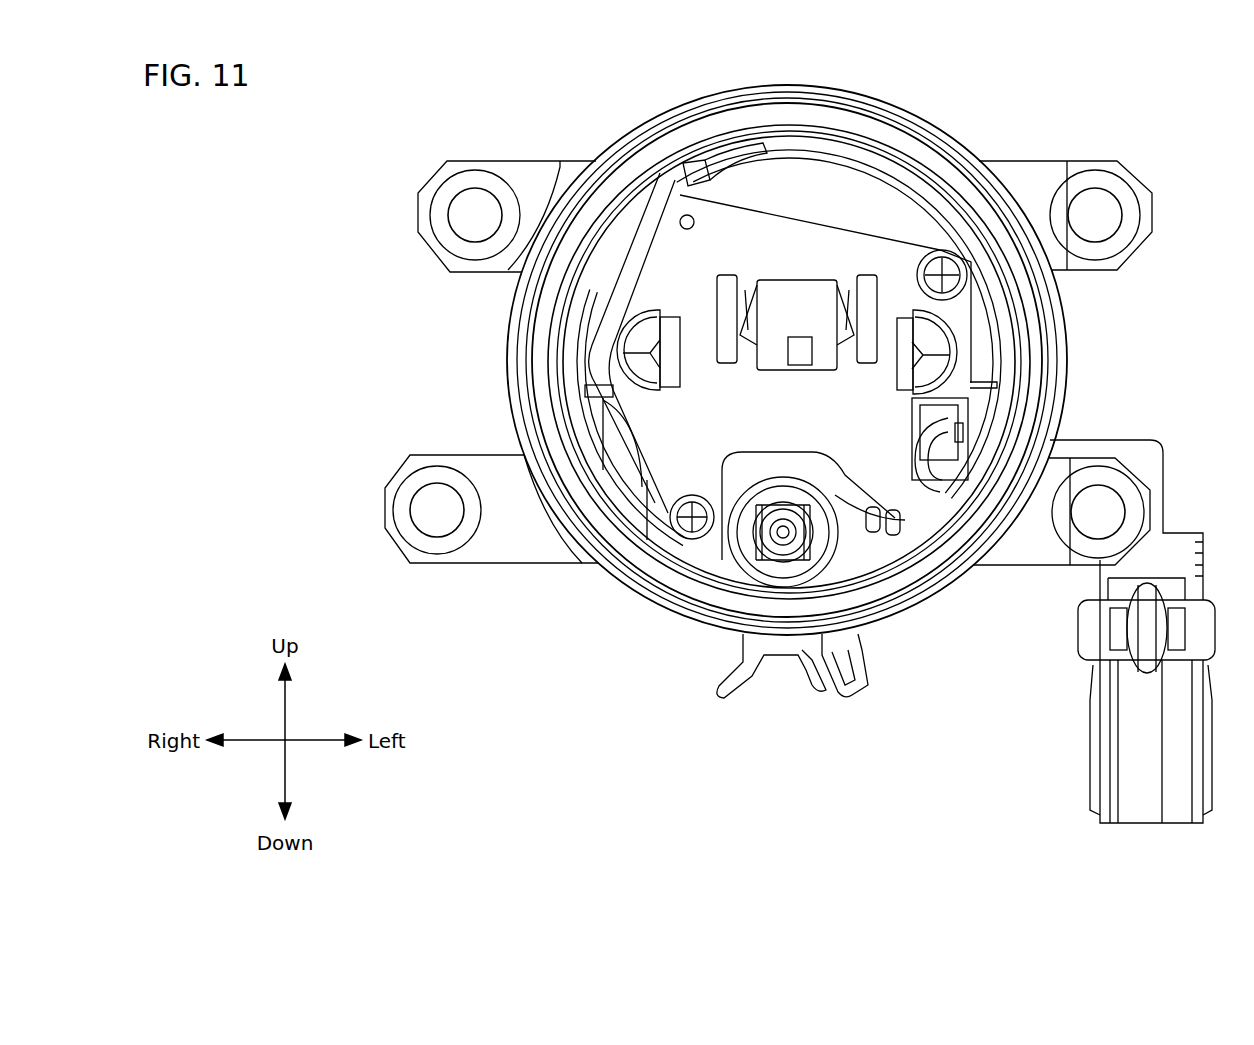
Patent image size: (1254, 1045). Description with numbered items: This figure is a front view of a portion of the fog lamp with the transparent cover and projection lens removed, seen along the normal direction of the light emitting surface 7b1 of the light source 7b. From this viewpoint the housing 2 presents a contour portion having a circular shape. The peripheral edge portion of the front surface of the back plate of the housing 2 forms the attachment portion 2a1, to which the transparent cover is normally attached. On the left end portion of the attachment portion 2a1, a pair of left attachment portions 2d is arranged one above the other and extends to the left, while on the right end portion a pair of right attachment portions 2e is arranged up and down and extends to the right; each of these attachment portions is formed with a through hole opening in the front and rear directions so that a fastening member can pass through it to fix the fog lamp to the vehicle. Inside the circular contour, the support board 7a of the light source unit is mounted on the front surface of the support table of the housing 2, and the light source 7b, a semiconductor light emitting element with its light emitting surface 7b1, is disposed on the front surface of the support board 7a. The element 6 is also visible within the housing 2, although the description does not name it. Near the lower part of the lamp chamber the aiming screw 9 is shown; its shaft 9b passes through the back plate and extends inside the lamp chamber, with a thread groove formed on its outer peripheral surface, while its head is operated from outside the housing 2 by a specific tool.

The housing 2 is at (651, 652).
The attachment portion 2a1 is at (655, 115).
The left attachment portions 2d is at (1052, 168).
The right attachment portions 2e is at (520, 168).
The plate 6 is at (877, 247).
The support board 7a is at (820, 193).
The light source 7b is at (802, 322).
The light emitting surface 7b1 is at (802, 360).
The aiming screw 9 is at (860, 578).
The shaft 9b is at (822, 538).